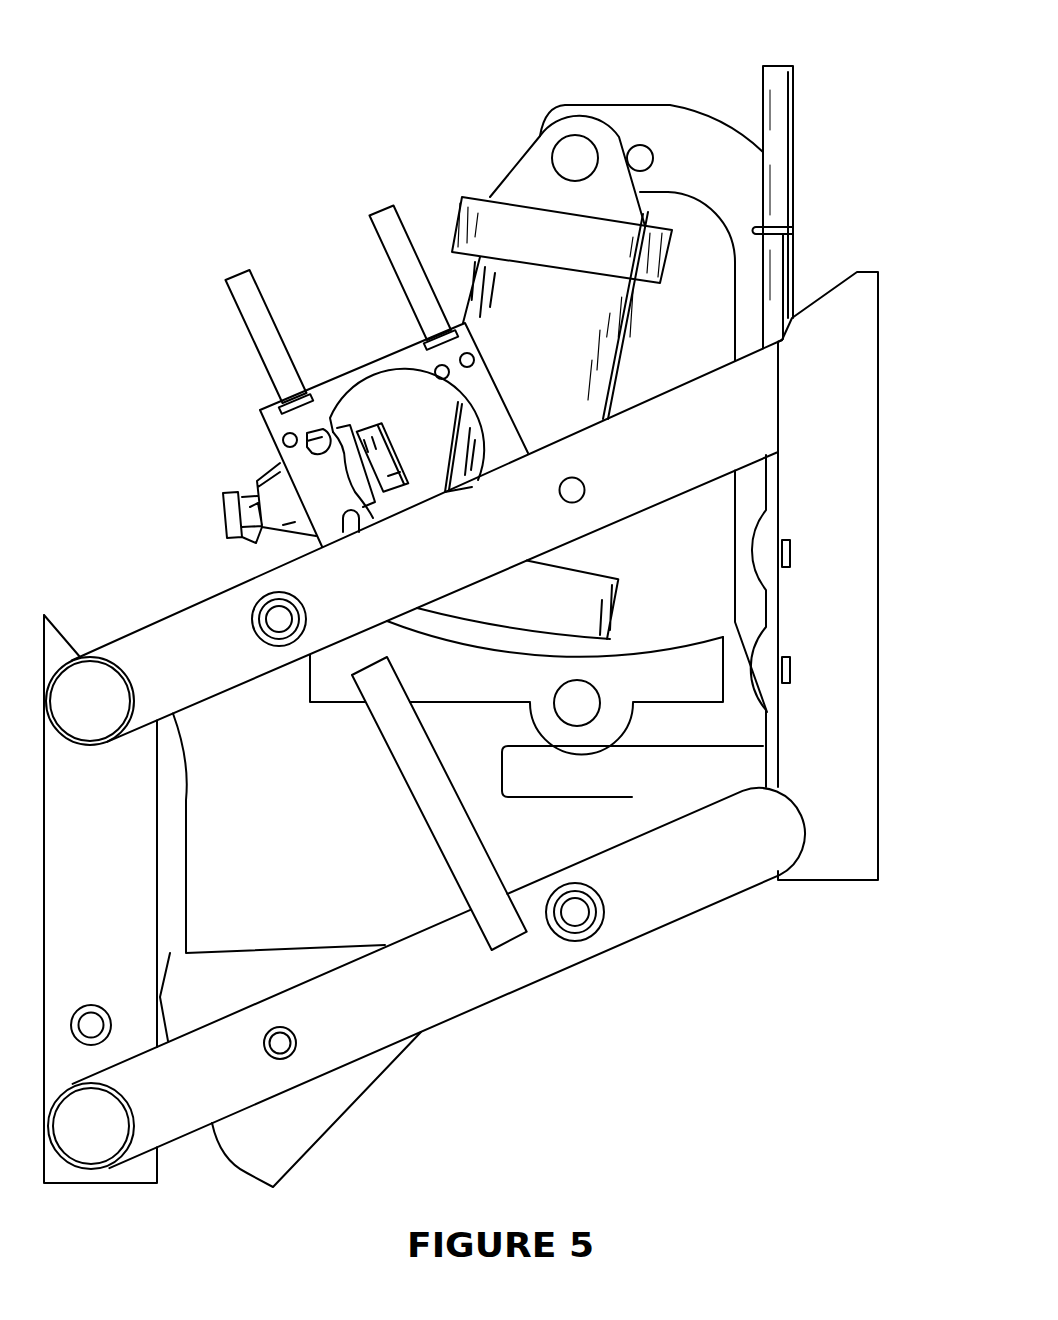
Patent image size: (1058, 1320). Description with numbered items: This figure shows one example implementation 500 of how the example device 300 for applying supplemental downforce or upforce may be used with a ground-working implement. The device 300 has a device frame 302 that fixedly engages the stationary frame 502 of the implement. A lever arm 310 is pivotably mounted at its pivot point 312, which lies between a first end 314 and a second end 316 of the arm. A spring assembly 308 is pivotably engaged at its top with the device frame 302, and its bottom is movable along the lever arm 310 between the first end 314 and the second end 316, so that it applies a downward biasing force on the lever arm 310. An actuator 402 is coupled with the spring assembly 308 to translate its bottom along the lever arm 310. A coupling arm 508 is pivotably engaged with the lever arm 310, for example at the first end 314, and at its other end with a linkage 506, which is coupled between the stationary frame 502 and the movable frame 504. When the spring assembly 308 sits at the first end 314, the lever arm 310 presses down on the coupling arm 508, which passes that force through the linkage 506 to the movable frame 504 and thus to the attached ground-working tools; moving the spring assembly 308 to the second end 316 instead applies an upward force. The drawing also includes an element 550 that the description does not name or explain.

The implementation 500 is at (207, 96).
The device 300 is at (487, 177).
The device frame 302 is at (728, 118).
The spring assembly 308 is at (632, 357).
The lever arm 310 is at (632, 642).
The pivot point 312 is at (577, 703).
The first end 314 is at (328, 688).
The second end 316 is at (700, 682).
The actuator 402 is at (252, 462).
The stationary frame 502 is at (863, 345).
The movable frame 504 is at (127, 1191).
The linkage 506 is at (684, 930).
The coupling arm 508 is at (422, 778).
The mounting plate 550 is at (370, 348).